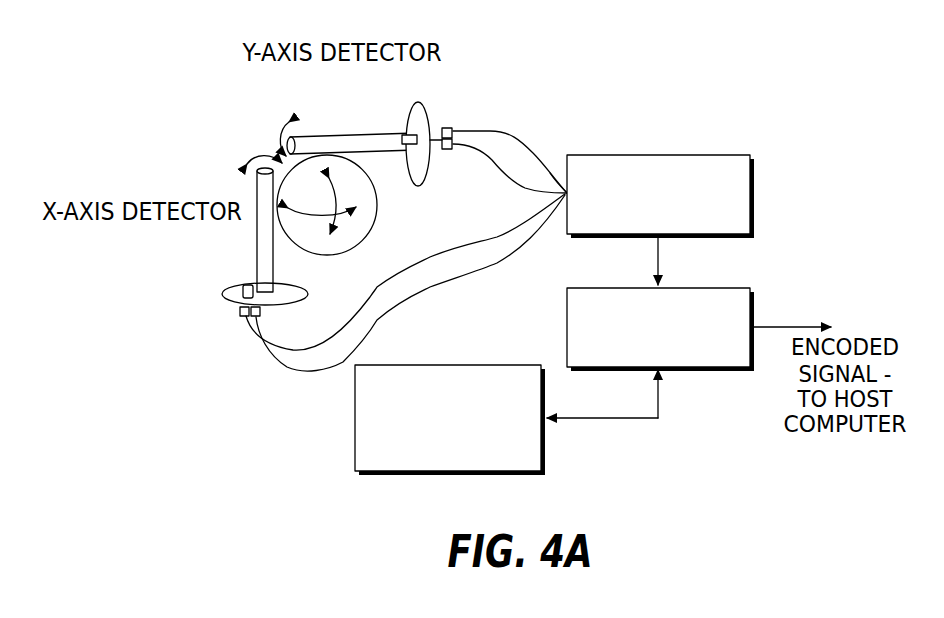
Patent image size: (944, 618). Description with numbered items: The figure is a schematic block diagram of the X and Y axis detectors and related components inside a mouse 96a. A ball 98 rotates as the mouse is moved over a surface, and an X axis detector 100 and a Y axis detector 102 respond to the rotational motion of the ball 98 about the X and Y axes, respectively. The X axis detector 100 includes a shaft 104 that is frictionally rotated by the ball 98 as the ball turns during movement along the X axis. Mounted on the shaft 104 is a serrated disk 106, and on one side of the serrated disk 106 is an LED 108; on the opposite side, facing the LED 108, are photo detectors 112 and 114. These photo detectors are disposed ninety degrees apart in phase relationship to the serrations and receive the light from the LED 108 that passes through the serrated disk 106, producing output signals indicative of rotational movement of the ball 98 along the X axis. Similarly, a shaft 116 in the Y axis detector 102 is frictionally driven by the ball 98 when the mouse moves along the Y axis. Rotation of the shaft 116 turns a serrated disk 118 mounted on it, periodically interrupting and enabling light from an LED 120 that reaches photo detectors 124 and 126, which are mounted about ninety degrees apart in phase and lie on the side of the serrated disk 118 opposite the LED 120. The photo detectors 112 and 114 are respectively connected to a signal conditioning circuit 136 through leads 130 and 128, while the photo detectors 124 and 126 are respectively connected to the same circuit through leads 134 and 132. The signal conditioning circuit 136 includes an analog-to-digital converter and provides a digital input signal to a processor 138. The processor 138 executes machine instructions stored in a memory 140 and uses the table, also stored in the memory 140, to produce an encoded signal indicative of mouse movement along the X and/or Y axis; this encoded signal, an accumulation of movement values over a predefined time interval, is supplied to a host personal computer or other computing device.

The input device 96a is at (277, 503).
The ball 98 is at (372, 223).
The X axis detector 100 is at (232, 375).
The Y axis detector 102 is at (483, 90).
The shaft 104 is at (257, 180).
The serrated disk 106 is at (222, 294).
The LED 108 is at (243, 288).
The photo detector 112 is at (240, 312).
The photo detector 114 is at (260, 311).
The shaft 116 is at (317, 135).
The serrated disk 118 is at (417, 187).
The LED 120 is at (417, 152).
The photo detector 124 is at (443, 128).
The photo detector 126 is at (472, 130).
The lead 128 is at (377, 290).
The lead 130 is at (477, 267).
The lead 132 is at (497, 177).
The lead 134 is at (550, 173).
The signal conditioning circuit 136 is at (645, 155).
The processor 138 is at (730, 293).
The memory 140 is at (545, 450).